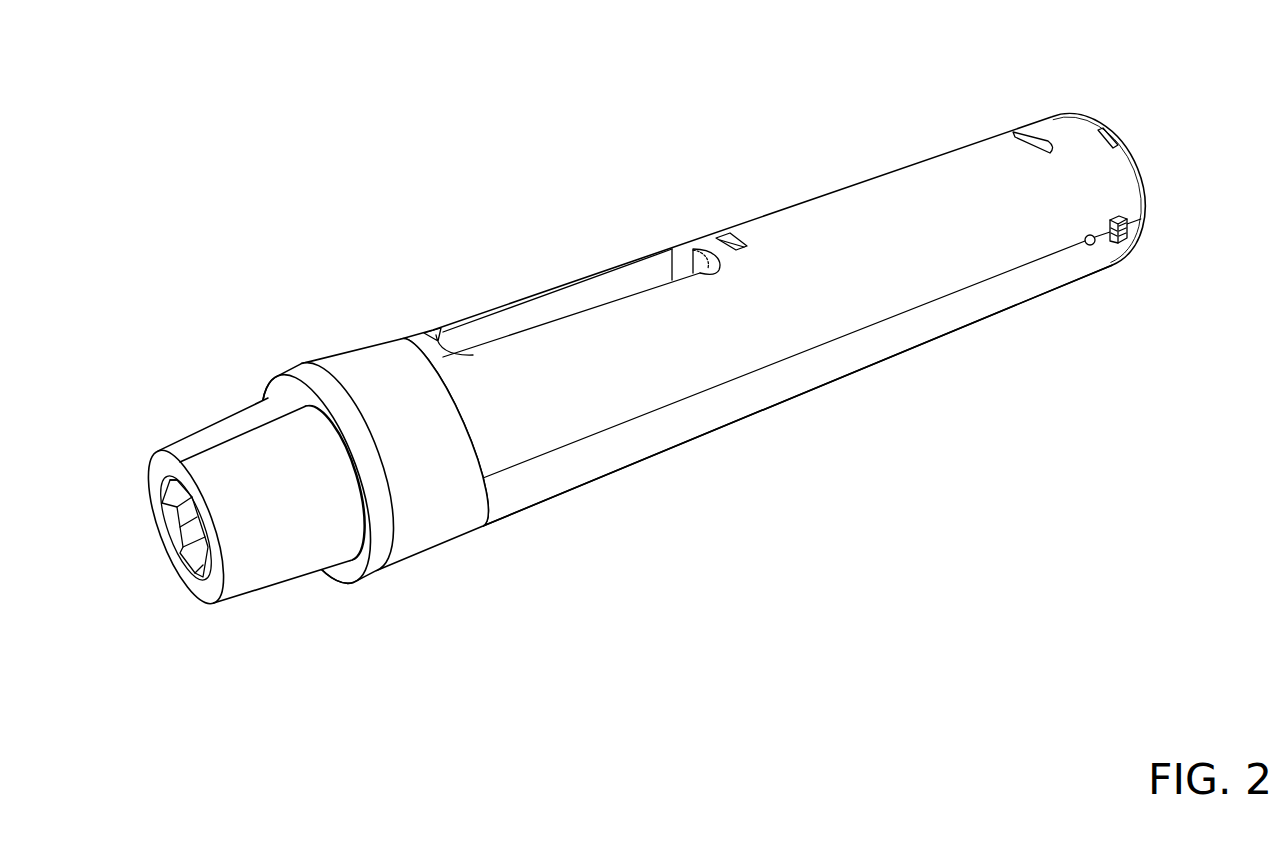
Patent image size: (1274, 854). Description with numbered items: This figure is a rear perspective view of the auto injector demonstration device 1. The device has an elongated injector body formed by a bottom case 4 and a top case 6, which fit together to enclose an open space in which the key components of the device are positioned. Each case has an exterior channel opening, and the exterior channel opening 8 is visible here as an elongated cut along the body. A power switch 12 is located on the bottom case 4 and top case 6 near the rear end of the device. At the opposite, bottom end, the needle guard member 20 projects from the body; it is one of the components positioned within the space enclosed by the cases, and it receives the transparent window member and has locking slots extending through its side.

The auto injector demonstration device 1 is at (703, 334).
The bottom case 4 is at (760, 395).
The top case 6 is at (875, 208).
The exterior channel opening 8 is at (562, 310).
The power switch 12 is at (1130, 237).
The needle guard member 20 is at (232, 455).